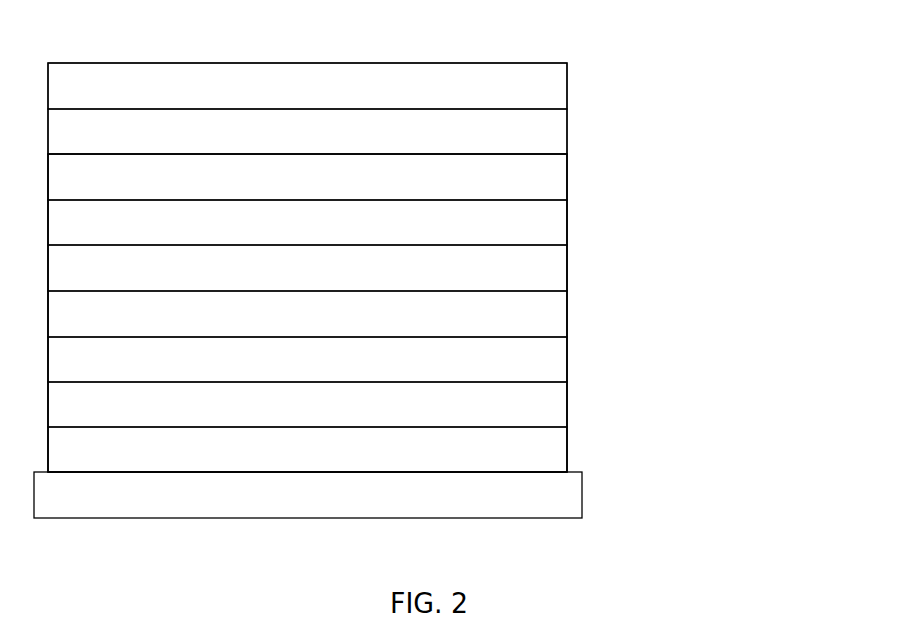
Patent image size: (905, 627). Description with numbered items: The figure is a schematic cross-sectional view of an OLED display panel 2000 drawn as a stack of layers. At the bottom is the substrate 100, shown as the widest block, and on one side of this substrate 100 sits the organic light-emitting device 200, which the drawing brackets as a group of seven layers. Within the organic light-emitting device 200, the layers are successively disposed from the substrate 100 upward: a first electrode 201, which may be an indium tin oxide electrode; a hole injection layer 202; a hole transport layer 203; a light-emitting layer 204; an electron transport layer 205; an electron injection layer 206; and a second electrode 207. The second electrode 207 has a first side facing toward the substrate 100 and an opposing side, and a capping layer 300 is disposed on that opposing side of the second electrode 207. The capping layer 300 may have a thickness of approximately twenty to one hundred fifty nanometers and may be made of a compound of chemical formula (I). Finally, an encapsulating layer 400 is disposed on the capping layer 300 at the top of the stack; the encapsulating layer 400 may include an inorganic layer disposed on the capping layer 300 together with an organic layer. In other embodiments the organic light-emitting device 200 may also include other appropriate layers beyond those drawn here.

The OLED display panel 2000 is at (557, 39).
The substrate 100 is at (584, 497).
The organic light-emitting device 200 is at (703, 163).
The first electrode 201 is at (568, 449).
The hole injection layer 202 is at (568, 412).
The hole transport layer 203 is at (568, 357).
The light-emitting layer 204 is at (568, 312).
The electron transport layer 205 is at (568, 264).
The electron injection layer 206 is at (568, 217).
The second electrode 207 is at (568, 176).
The capping layer 300 is at (568, 137).
The encapsulating layer 400 is at (568, 92).